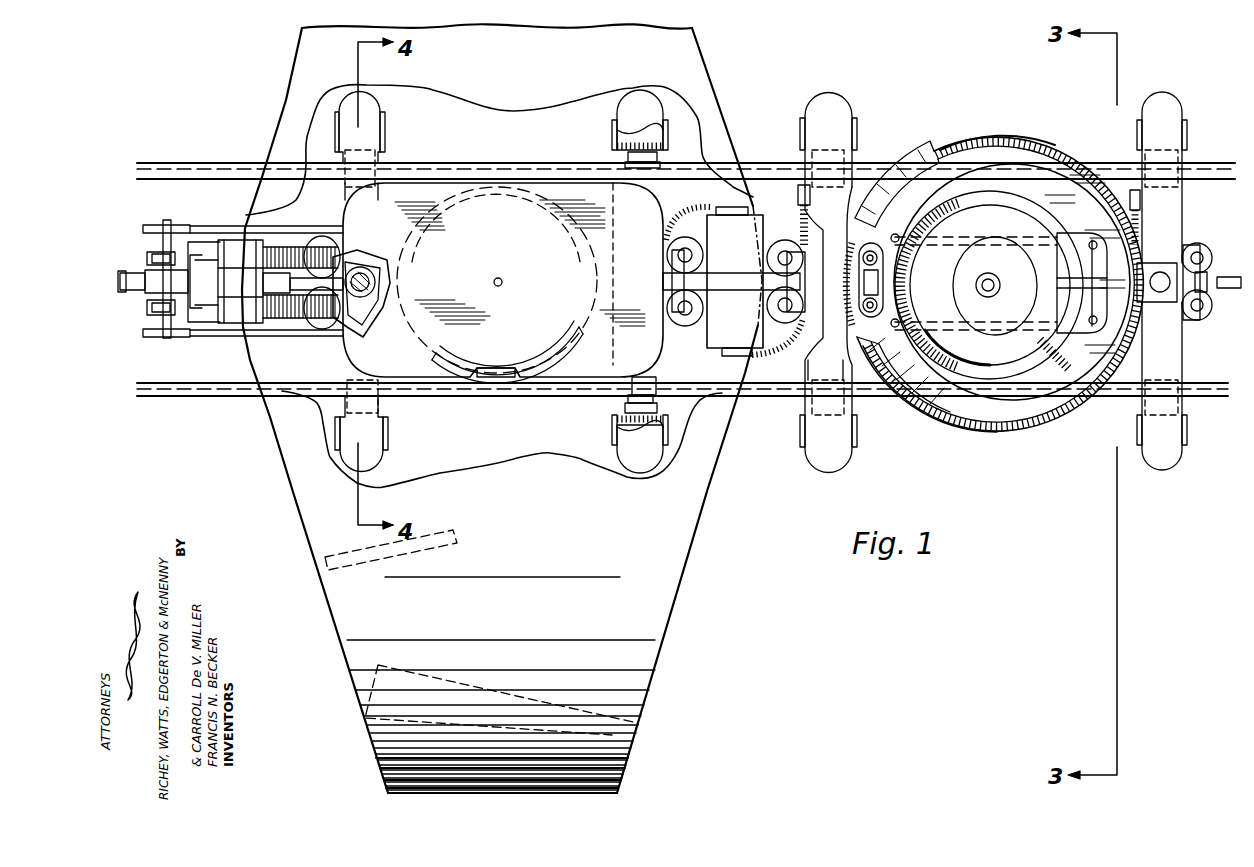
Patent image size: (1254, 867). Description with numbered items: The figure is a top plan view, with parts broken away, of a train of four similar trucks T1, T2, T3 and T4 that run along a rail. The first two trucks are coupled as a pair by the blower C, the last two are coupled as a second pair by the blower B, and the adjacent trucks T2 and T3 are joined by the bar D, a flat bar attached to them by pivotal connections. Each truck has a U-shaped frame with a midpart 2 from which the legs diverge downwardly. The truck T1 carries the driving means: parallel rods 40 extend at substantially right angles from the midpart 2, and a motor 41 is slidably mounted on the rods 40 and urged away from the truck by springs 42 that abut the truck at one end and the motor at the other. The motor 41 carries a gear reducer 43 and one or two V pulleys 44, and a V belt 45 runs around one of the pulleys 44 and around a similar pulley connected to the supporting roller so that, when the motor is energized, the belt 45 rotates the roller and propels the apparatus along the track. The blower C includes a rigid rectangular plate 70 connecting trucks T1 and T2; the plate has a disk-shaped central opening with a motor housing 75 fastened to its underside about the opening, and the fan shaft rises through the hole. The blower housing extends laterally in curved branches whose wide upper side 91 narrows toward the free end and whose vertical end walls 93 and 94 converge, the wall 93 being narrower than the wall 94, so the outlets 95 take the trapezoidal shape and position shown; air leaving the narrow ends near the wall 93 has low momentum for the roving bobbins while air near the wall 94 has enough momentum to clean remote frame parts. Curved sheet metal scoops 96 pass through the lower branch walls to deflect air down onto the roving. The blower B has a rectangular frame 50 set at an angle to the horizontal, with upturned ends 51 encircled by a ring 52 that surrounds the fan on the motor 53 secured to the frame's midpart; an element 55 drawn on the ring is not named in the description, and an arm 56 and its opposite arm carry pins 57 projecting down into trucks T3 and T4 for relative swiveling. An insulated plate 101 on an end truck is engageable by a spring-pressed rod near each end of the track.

The midpart 2 is at (812, 205).
The parallel rods 40 is at (197, 323).
The motor 41 is at (210, 245).
The springs 42 is at (340, 248).
The gear reducer 43 is at (152, 278).
The V pulleys 44 is at (175, 225).
The V belt 45 is at (232, 226).
The rectangular frame 50 is at (1065, 240).
The upturned ends 51 is at (1160, 293).
The ring 52 is at (918, 165).
The motor 53 is at (936, 222).
The brake band lining 55 is at (942, 158).
The arm 56 is at (1150, 266).
The pins 57 is at (1098, 262).
The rectangular plate 70 is at (463, 260).
The motor housing 75 is at (514, 350).
The upper side 91 is at (622, 552).
The end wall 93 is at (323, 604).
The end wall 94 is at (690, 605).
The outlets 95 is at (635, 722).
The scoops 96 is at (450, 528).
The plate 101 is at (132, 292).
The truck T1 is at (378, 440).
The truck T2 is at (625, 445).
The truck T3 is at (848, 448).
The truck T4 is at (1170, 447).
The blower B is at (995, 436).
The blower C is at (532, 275).
The bar D is at (722, 285).